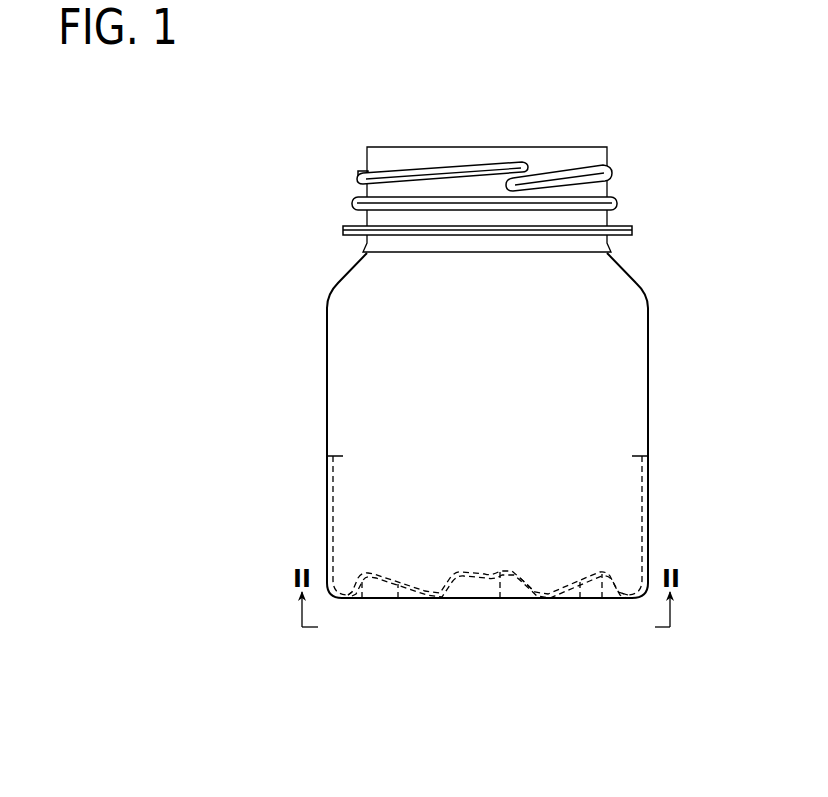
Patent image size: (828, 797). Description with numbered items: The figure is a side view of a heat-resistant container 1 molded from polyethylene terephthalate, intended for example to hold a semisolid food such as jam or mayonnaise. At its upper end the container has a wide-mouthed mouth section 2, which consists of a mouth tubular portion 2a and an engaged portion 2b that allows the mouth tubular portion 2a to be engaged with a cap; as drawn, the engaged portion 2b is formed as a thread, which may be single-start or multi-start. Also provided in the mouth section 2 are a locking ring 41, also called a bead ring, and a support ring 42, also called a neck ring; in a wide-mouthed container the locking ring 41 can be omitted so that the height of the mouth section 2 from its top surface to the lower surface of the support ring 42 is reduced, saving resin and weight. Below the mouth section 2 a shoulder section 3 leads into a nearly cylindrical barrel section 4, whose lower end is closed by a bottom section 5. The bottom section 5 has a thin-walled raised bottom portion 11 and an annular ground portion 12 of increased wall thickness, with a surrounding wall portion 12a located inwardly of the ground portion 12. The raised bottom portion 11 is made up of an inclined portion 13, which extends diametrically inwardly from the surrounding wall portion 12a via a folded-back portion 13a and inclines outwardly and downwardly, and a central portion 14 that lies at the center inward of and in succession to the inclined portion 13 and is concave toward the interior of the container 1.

The heat-resistant container 1 is at (312, 362).
The mouth section 2 is at (552, 143).
The mouth tubular portion 2a is at (612, 184).
The engaged portion 2b is at (448, 166).
The shoulder section 3 is at (632, 278).
The barrel section 4 is at (327, 433).
The bottom section 5 is at (483, 600).
The raised bottom portion 11 is at (528, 600).
The ground portion 12 is at (352, 598).
The surrounding wall portion 12a is at (362, 598).
The inclined portion 13 is at (398, 598).
The folded-back portion 13a is at (602, 598).
The central portion 14 is at (500, 598).
The locking ring 41 is at (618, 203).
The support ring 42 is at (352, 228).